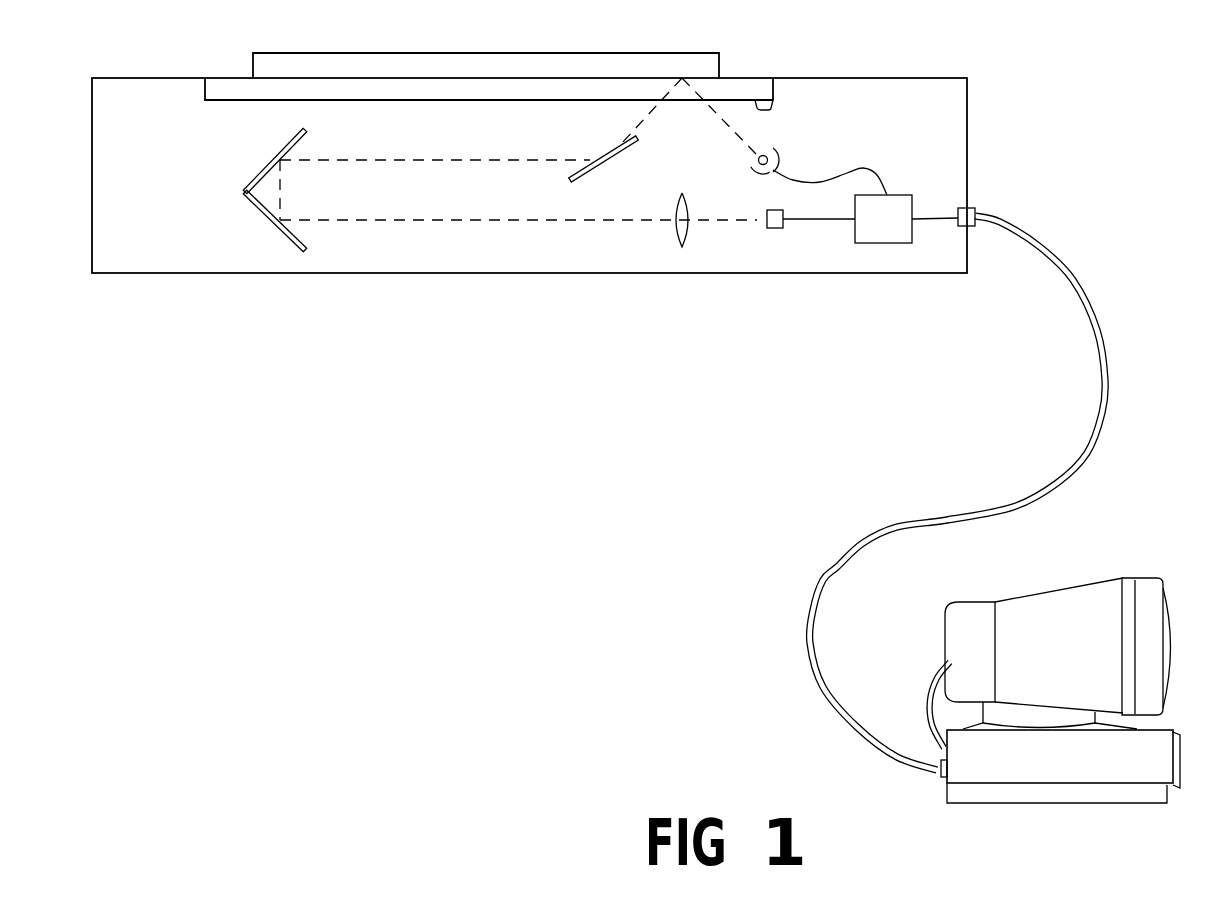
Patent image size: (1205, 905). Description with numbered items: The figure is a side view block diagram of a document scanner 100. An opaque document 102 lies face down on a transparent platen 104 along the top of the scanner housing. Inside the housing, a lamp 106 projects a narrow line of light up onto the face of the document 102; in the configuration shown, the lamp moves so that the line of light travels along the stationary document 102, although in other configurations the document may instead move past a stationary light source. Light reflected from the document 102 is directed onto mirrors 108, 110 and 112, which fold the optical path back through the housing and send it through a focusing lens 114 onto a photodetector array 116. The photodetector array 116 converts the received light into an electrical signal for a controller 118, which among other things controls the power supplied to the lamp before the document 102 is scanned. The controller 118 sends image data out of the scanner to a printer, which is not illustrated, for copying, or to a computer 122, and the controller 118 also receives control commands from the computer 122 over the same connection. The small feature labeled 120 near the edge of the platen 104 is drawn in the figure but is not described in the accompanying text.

The document scanner 100 is at (180, 243).
The opaque document 102 is at (358, 50).
The transparent platen 104 is at (230, 78).
The lamp 106 is at (773, 148).
The mirror 108 is at (603, 163).
The mirror 110 is at (277, 157).
The mirror 112 is at (277, 230).
The focusing lens 114 is at (680, 233).
The photodetector array 116 is at (773, 228).
The controller 118 is at (902, 195).
The reference mark 120 is at (773, 101).
The computer 122 is at (1085, 777).